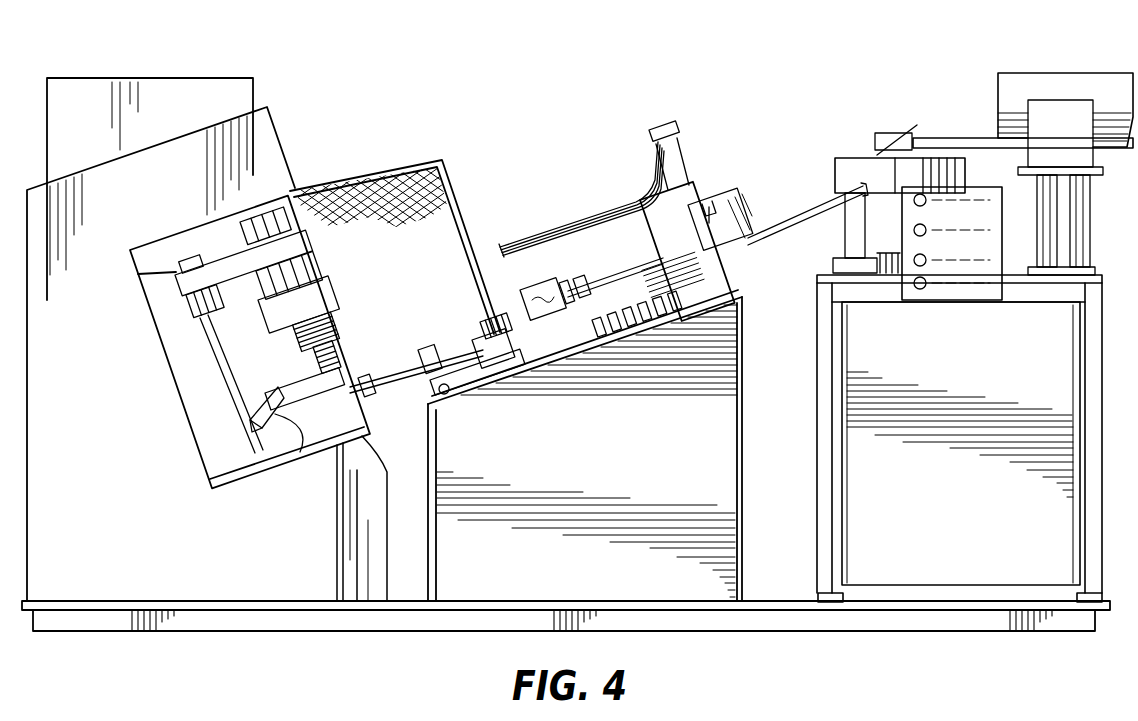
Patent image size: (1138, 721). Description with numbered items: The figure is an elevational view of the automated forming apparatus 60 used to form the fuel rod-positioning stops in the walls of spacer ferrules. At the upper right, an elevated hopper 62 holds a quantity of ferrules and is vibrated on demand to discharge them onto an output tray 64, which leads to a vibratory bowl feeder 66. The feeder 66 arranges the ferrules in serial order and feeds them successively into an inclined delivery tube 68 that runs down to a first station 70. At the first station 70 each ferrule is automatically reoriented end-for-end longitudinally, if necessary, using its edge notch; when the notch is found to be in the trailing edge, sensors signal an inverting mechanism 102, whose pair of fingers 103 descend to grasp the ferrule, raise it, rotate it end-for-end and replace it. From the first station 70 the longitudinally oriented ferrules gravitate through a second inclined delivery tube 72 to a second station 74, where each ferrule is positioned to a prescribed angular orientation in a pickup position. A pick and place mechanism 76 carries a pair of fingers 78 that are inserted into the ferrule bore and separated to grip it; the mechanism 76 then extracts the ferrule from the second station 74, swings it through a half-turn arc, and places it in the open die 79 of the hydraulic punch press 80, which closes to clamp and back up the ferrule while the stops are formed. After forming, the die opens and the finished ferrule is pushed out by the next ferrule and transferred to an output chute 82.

The automated forming apparatus 60 is at (648, 112).
The elevated hopper 62 is at (1093, 85).
The output tray 64 is at (945, 142).
The vibratory bowl feeder 66 is at (848, 163).
The inclined delivery tube 68 is at (782, 240).
The first station 70 is at (630, 187).
The inclined delivery tube 72 is at (613, 280).
The second station 74 is at (538, 283).
The pick and place mechanism 76 is at (460, 330).
The fingers 78 is at (500, 313).
The open die 79 is at (333, 367).
The hydraulic punch press 80 is at (323, 242).
The output chute 82 is at (278, 413).
The inverting mechanism 102 is at (690, 158).
The fingers 103 is at (728, 197).